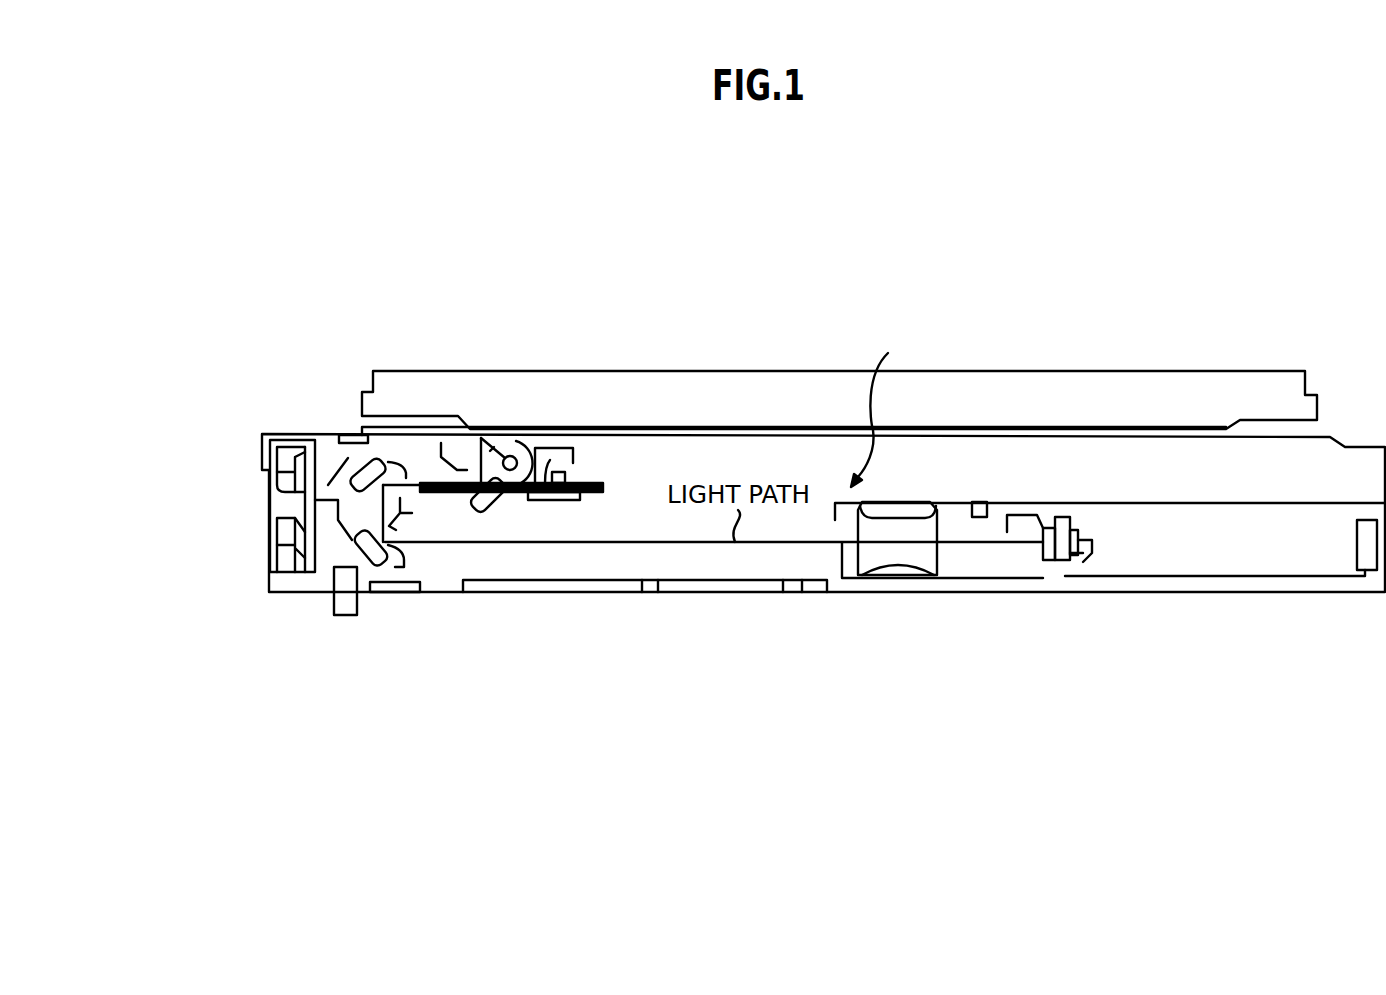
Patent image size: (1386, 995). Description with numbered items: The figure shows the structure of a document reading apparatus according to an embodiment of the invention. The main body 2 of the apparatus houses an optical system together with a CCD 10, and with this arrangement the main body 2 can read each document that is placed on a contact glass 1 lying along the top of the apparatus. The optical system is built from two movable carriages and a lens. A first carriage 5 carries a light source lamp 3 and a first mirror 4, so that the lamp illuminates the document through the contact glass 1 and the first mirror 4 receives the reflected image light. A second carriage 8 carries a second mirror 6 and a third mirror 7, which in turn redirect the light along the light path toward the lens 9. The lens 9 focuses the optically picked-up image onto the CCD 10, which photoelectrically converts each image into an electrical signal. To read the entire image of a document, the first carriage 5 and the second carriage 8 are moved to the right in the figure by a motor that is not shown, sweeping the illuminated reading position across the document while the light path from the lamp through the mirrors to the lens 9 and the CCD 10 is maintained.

The contact glass 1 is at (797, 427).
The main body 2 is at (877, 415).
The light source lamp 3 is at (527, 452).
The first mirror 4 is at (493, 510).
The first carriage 5 is at (575, 473).
The second mirror 6 is at (360, 470).
The third mirror 7 is at (367, 553).
The second carriage 8 is at (332, 475).
The lens 9 is at (884, 528).
The CCD 10 is at (1050, 558).